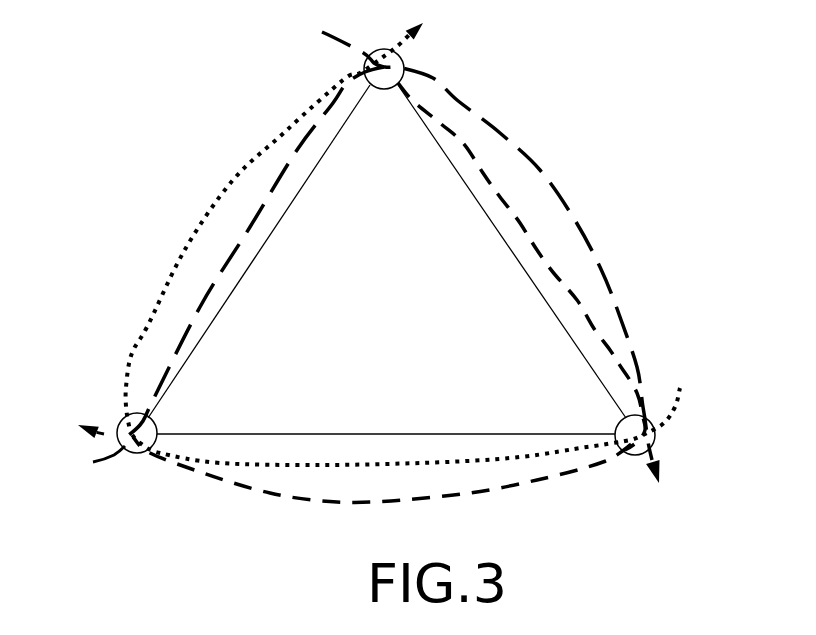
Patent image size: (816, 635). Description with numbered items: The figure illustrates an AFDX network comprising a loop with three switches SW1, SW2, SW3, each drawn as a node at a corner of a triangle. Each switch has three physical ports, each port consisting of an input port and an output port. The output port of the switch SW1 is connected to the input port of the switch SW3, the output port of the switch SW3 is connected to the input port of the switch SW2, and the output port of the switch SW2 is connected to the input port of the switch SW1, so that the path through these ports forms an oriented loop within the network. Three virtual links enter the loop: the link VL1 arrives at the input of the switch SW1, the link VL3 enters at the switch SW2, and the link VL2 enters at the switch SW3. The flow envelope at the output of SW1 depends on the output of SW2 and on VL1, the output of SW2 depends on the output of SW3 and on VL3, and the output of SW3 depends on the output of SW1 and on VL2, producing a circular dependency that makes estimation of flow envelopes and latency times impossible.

The switch SW1 is at (388, 101).
The switch SW2 is at (605, 426).
The switch SW3 is at (172, 425).
The link VL1 is at (369, 241).
The link VL2 is at (419, 244).
The link VL3 is at (336, 292).